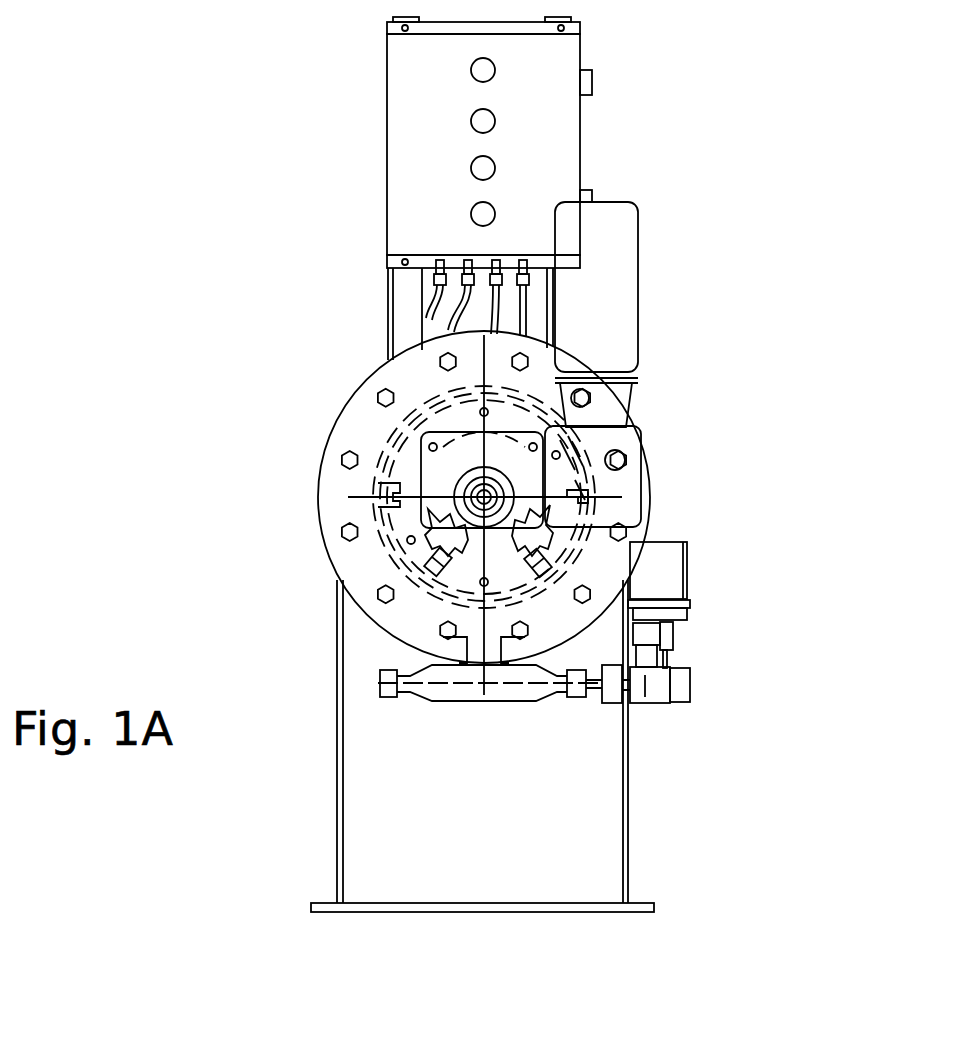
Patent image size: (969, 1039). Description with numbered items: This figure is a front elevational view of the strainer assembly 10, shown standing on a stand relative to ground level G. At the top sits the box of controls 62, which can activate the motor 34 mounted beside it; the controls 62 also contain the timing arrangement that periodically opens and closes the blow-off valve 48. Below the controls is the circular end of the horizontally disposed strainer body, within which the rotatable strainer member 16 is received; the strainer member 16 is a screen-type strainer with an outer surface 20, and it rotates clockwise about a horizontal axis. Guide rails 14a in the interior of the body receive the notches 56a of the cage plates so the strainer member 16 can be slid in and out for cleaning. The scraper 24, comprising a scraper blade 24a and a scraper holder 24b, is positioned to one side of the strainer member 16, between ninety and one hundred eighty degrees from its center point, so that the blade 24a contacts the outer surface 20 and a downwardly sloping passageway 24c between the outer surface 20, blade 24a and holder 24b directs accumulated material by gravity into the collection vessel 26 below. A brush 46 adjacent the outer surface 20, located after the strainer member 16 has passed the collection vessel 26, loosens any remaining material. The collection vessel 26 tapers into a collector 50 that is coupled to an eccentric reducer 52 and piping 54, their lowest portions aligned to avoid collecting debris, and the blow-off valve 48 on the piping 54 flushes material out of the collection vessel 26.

The strainer assembly 10 is at (708, 122).
The controls 62 is at (417, 172).
The motor 34 is at (603, 308).
The rotatable strainer member 16 is at (442, 470).
The notch 56a is at (397, 487).
The guide rails 14a is at (440, 468).
The outer surface 20 is at (398, 530).
The brush 46 is at (432, 560).
The scraper 24 is at (537, 548).
The scraper blade 24a is at (543, 527).
The downwardly sloping surface passageway 24c is at (550, 556).
The scraper holder 24b is at (675, 627).
The blow-off valve 48 is at (660, 577).
The collection vessel 26 is at (434, 684).
The collector 50 is at (480, 706).
The eccentric reducer 52 is at (590, 690).
The piping 54 is at (657, 703).
The ground level G is at (525, 912).